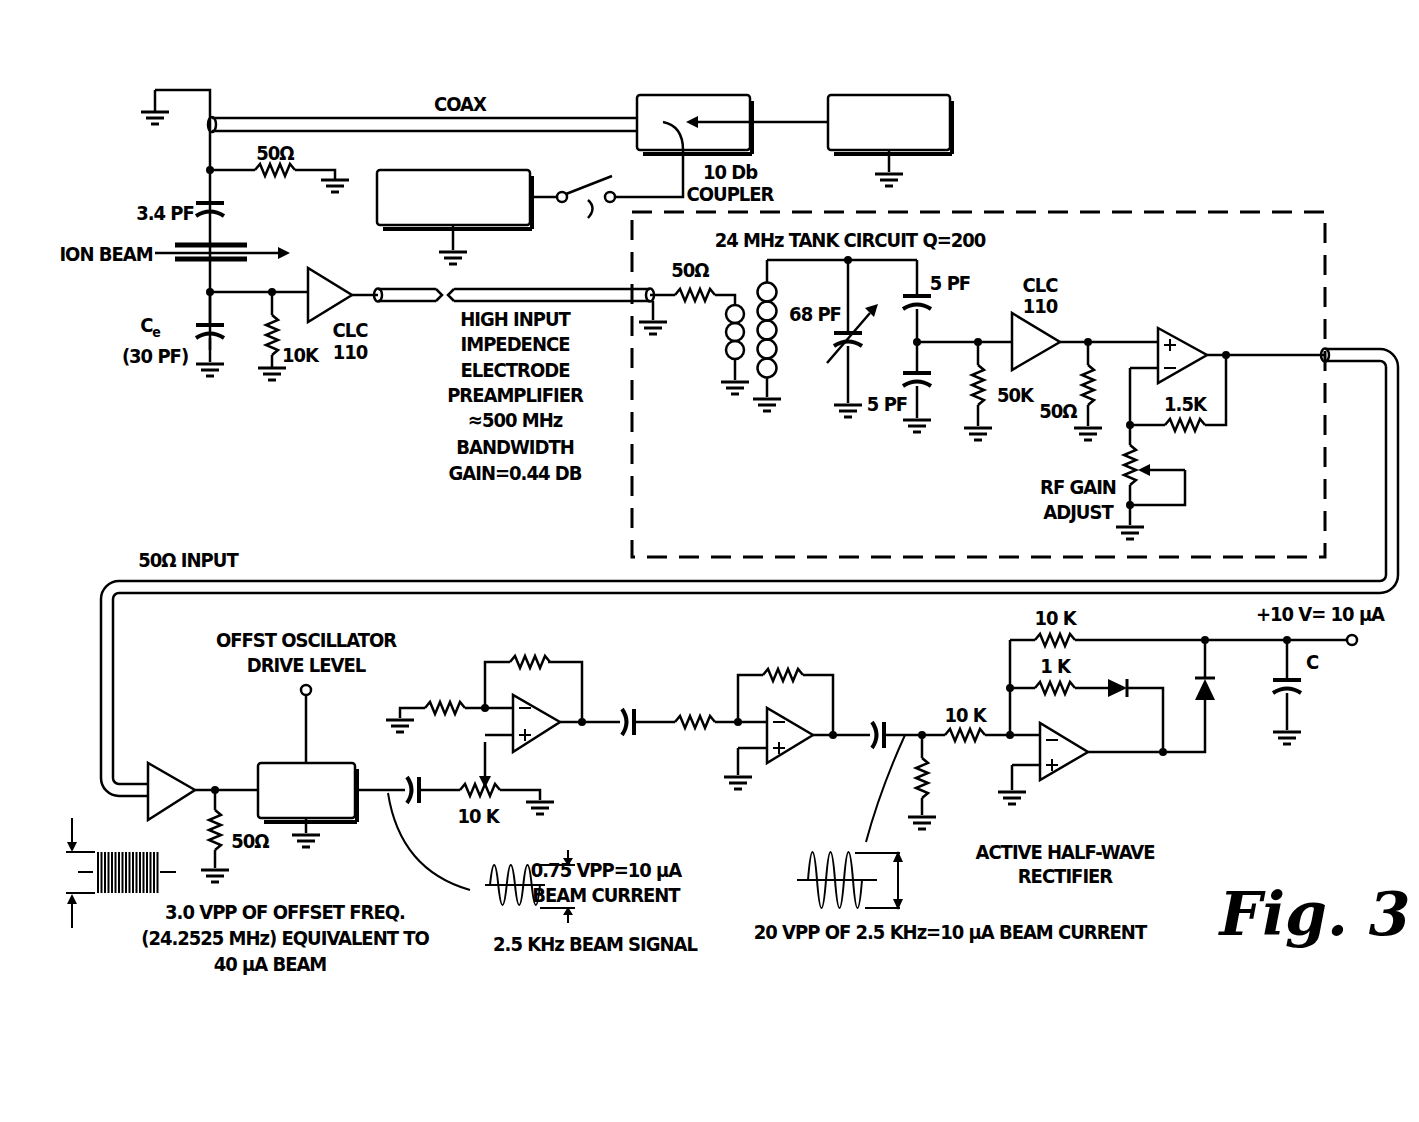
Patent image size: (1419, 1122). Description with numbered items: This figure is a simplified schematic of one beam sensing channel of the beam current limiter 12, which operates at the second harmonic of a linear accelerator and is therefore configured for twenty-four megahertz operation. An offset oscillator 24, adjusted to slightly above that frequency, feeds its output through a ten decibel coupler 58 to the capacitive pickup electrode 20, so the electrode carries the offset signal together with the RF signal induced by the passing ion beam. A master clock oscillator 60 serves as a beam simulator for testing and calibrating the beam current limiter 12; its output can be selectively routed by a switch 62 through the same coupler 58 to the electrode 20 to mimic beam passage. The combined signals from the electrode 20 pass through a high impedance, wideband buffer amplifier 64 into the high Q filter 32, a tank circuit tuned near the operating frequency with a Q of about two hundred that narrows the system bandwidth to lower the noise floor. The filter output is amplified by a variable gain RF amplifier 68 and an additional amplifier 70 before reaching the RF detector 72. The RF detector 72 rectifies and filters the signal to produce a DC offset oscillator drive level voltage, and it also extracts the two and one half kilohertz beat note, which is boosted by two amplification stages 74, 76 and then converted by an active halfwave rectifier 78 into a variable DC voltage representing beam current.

The beam current limiter 12 is at (1180, 140).
The capacitive pickup electrode 20 is at (188, 268).
The offset oscillator 24 is at (952, 125).
The high Q filter 32 is at (1103, 212).
The 10 dB coupler 58 is at (755, 137).
The master clock oscillator 60 is at (455, 168).
The switch 62 is at (606, 199).
The buffer amplifier 64 is at (333, 278).
The variable gain RF amplifier 68 is at (1185, 338).
The additional amplifier 70 is at (165, 770).
The RF detector 72 is at (352, 820).
The amplification stage 74 is at (542, 735).
The amplification stage 76 is at (793, 757).
The active halfwave rectifier 78 is at (1068, 765).